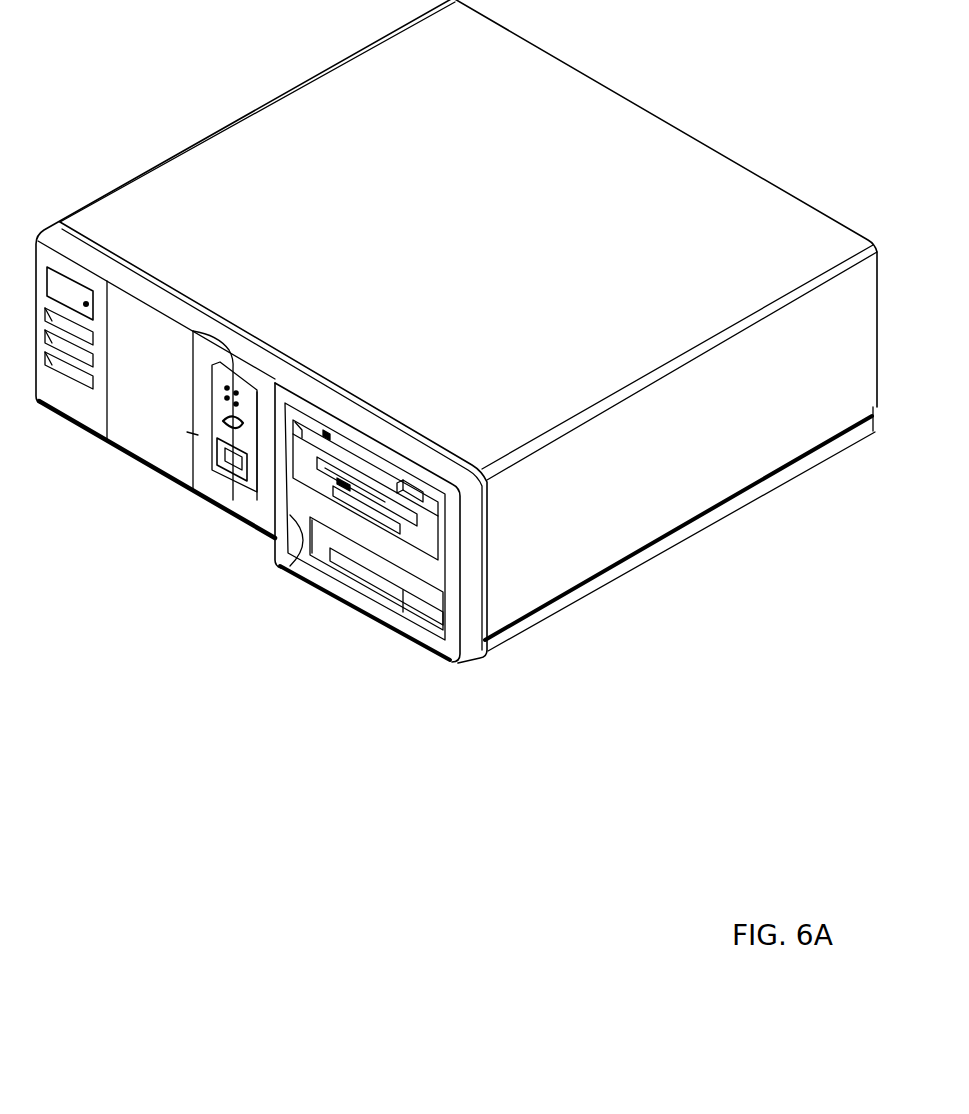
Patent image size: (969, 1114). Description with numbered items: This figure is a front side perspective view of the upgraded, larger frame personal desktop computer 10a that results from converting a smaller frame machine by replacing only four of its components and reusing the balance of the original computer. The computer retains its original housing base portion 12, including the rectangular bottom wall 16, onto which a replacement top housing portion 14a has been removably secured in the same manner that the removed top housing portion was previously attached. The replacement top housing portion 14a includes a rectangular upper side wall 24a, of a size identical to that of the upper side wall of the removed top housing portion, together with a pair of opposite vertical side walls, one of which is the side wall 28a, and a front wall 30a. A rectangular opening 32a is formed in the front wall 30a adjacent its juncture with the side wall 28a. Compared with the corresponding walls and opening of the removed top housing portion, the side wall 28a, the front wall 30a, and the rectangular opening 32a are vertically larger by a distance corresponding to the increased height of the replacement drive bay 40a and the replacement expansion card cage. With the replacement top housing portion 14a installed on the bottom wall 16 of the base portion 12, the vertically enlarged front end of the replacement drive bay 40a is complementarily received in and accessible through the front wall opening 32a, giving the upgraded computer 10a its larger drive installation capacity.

The larger frame personal desktop computer 10a is at (715, 118).
The replacement top housing portion 14a is at (727, 233).
The upper side wall 24a is at (473, 264).
The side wall 28a is at (777, 422).
The base portion 12 is at (667, 543).
The bottom wall 16 is at (567, 598).
The front wall 30a is at (140, 430).
The rectangular opening 32a is at (302, 570).
The replacement drive bay 40a is at (428, 578).